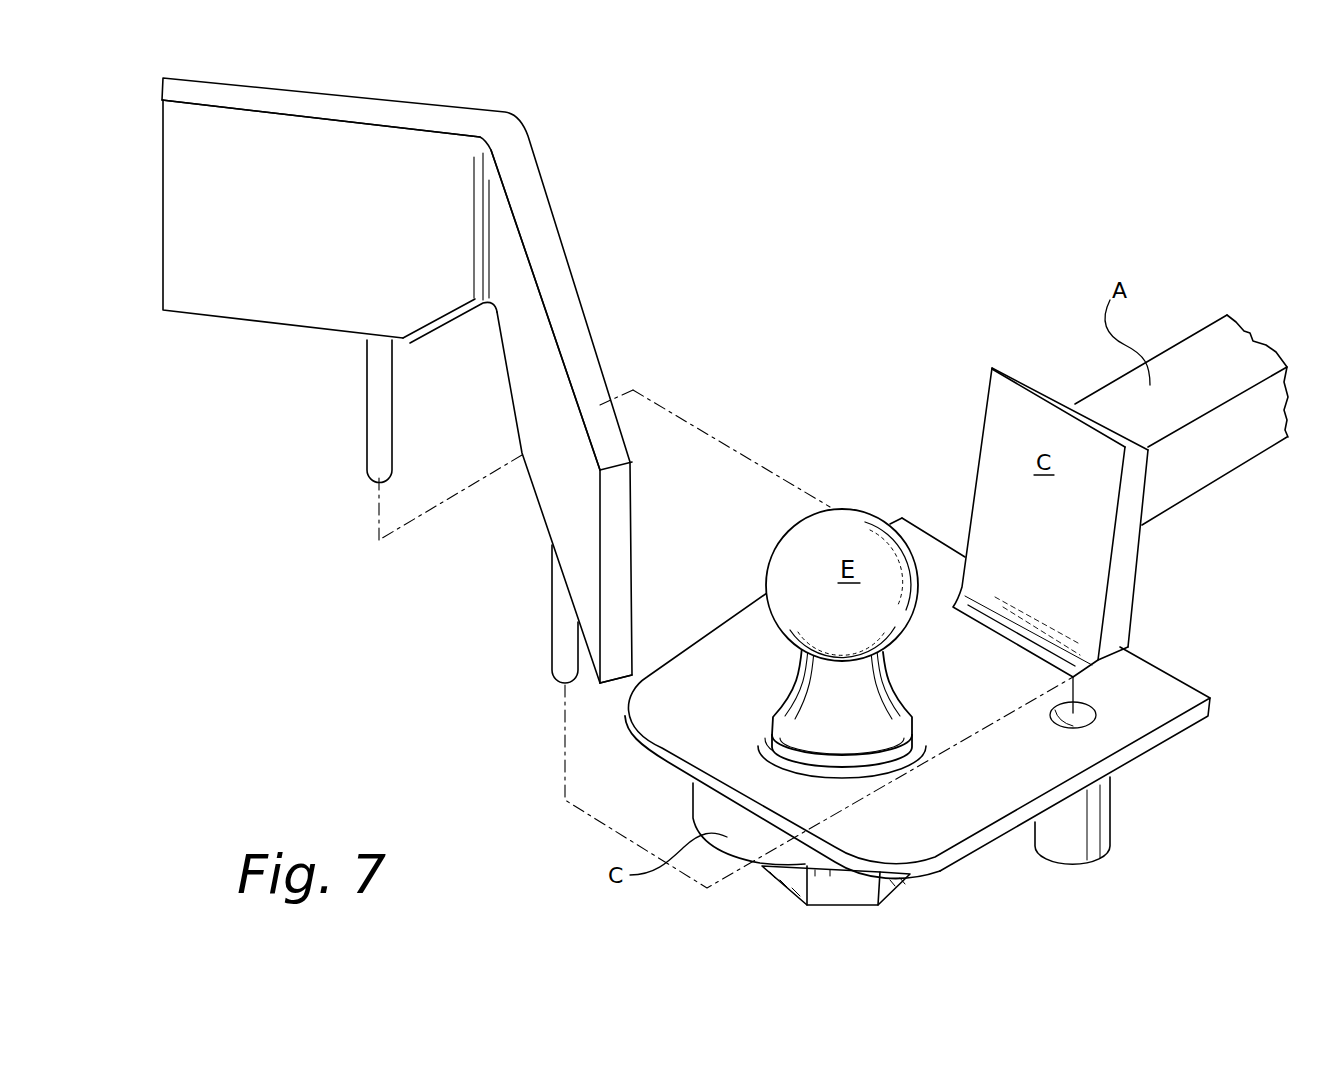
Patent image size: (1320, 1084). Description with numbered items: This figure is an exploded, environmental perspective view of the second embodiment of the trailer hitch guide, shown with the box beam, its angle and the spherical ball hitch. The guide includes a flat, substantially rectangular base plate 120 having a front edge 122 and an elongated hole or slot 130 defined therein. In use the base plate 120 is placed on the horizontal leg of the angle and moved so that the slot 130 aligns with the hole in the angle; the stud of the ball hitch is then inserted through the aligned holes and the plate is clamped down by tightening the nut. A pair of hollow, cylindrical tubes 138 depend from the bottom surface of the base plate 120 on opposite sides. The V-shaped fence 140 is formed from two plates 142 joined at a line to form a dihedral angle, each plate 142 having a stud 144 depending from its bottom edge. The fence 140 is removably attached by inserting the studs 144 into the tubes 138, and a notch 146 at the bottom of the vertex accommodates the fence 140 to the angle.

The base plate 120 is at (1004, 851).
The front edge 122 is at (695, 773).
The hole or slot 130 is at (767, 743).
The hollow cylindrical tubes 138 is at (1093, 817).
The V-shaped fence 140 is at (645, 206).
The plates 142 is at (400, 117).
The stud 144 is at (375, 367).
The notch 146 is at (474, 327).